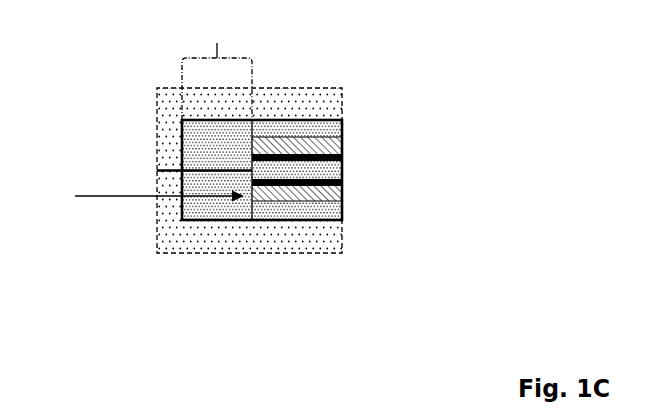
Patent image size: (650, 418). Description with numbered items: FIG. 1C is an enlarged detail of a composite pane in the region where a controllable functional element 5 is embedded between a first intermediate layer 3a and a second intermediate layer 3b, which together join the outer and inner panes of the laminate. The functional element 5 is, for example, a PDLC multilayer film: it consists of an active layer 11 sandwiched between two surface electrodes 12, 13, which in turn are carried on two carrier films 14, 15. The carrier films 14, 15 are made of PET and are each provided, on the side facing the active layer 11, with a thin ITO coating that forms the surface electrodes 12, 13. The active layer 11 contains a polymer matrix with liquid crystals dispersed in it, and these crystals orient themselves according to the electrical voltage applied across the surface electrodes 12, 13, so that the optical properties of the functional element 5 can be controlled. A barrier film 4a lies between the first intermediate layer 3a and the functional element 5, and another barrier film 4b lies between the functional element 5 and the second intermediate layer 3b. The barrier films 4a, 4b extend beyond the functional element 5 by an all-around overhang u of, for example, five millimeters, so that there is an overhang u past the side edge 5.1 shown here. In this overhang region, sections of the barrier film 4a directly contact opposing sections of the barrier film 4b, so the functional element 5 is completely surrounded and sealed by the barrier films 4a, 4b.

The first intermediate layer 3a is at (315, 102).
The second intermediate layer 3b is at (312, 243).
The barrier film 4a is at (200, 143).
The barrier film 4b is at (193, 203).
The functional element 5 is at (363, 168).
The side edge 5.1 is at (139, 197).
The active layer 11 is at (252, 172).
The surface electrode 12 is at (342, 156).
The surface electrode 13 is at (342, 187).
The carrier film 14 is at (313, 147).
The carrier film 15 is at (334, 209).
The overhang u is at (217, 65).